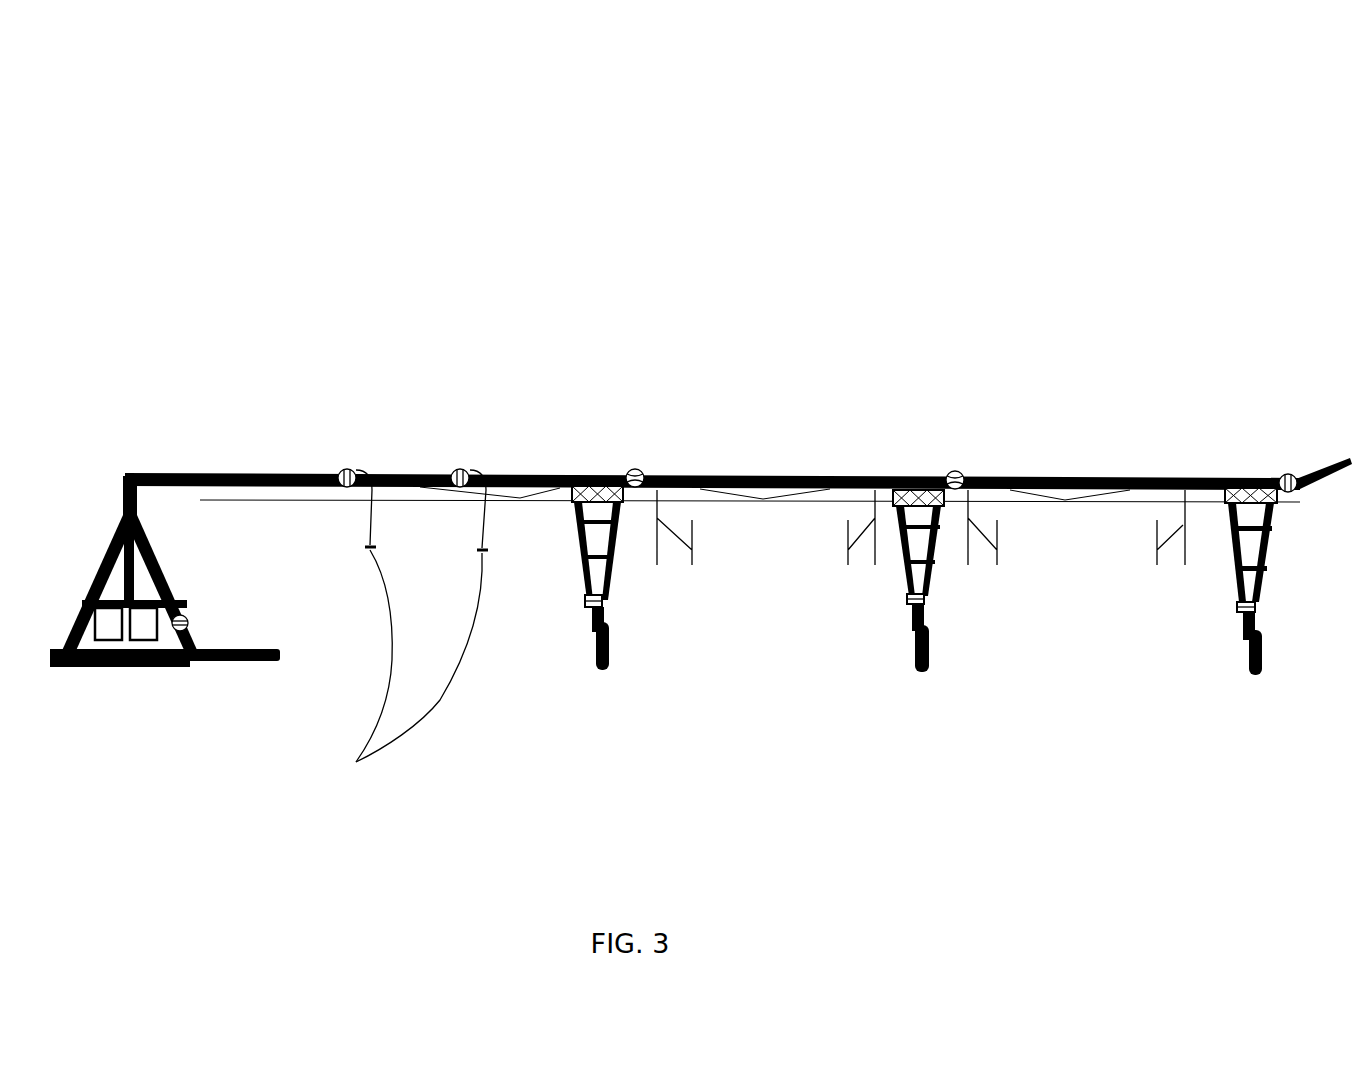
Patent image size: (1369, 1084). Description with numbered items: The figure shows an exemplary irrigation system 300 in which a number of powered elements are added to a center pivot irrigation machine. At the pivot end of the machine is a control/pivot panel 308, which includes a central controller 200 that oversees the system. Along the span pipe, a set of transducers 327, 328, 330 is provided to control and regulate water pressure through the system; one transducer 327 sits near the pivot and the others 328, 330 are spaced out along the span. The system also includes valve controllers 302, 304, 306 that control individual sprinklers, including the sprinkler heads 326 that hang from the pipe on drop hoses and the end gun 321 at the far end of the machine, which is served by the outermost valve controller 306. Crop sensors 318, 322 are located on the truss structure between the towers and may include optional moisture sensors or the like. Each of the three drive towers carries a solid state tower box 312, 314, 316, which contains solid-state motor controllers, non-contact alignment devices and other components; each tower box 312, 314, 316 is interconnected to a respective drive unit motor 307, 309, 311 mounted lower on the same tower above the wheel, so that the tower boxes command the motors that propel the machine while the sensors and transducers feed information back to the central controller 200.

The system 300 is at (698, 108).
The central controller 200 is at (148, 632).
The valve controller 302 is at (348, 468).
The valve controller 304 is at (459, 468).
The valve controller 306 is at (1291, 470).
The drive unit motor 307 is at (602, 600).
The control/pivot panel 308 is at (147, 620).
The drive unit motor 309 is at (923, 598).
The drive unit motor 311 is at (1255, 608).
The solid state tower box 312 is at (582, 487).
The solid state tower box 314 is at (907, 488).
The solid state tower box 316 is at (1225, 498).
The crop sensor 318 is at (690, 547).
The end gun 321 is at (1312, 470).
The crop sensor 322 is at (1153, 550).
The sprinkler heads 326 is at (408, 631).
The transducer 327 is at (190, 623).
The transducer 328 is at (643, 470).
The transducer 330 is at (961, 472).